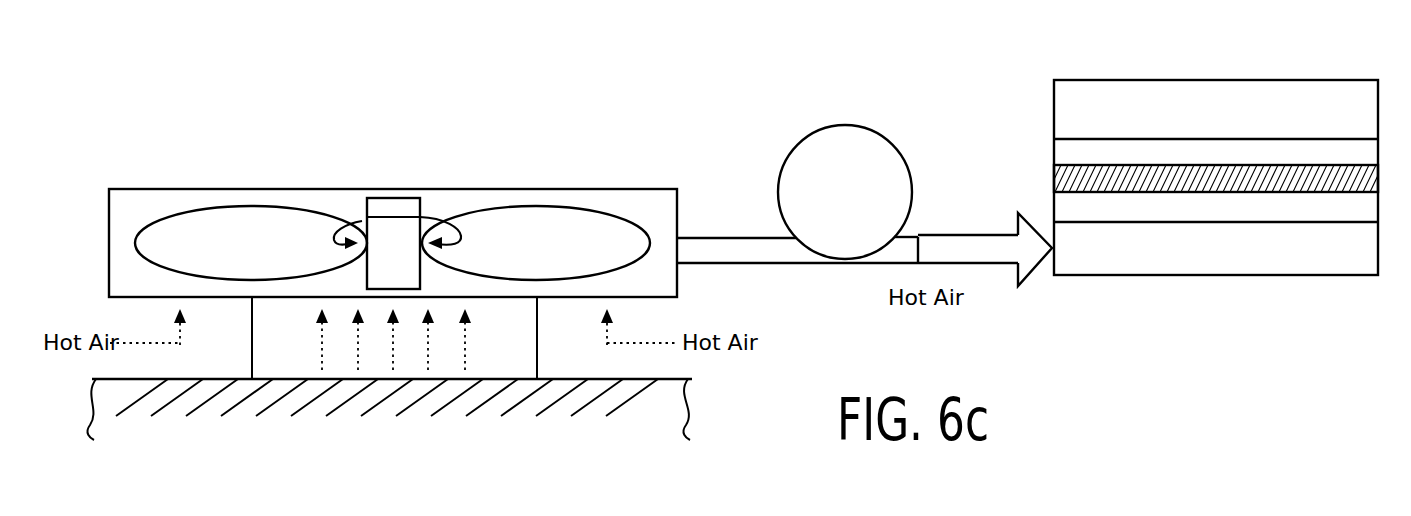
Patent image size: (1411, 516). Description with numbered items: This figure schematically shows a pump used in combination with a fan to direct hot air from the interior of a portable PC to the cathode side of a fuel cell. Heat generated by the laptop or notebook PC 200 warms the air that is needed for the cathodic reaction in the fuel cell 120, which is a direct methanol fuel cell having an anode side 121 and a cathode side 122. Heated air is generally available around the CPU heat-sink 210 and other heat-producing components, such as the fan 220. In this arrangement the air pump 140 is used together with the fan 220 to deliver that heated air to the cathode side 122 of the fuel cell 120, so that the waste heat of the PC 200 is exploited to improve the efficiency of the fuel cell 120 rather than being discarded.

The fuel cell 120 is at (864, 200).
The anode side 121 is at (1065, 125).
The cathode side 122 is at (1255, 262).
The air pump 140 is at (861, 206).
The laptop or notebook PC 200 is at (409, 465).
The CPU heat-sink 210 is at (257, 320).
The fan 220 is at (386, 178).